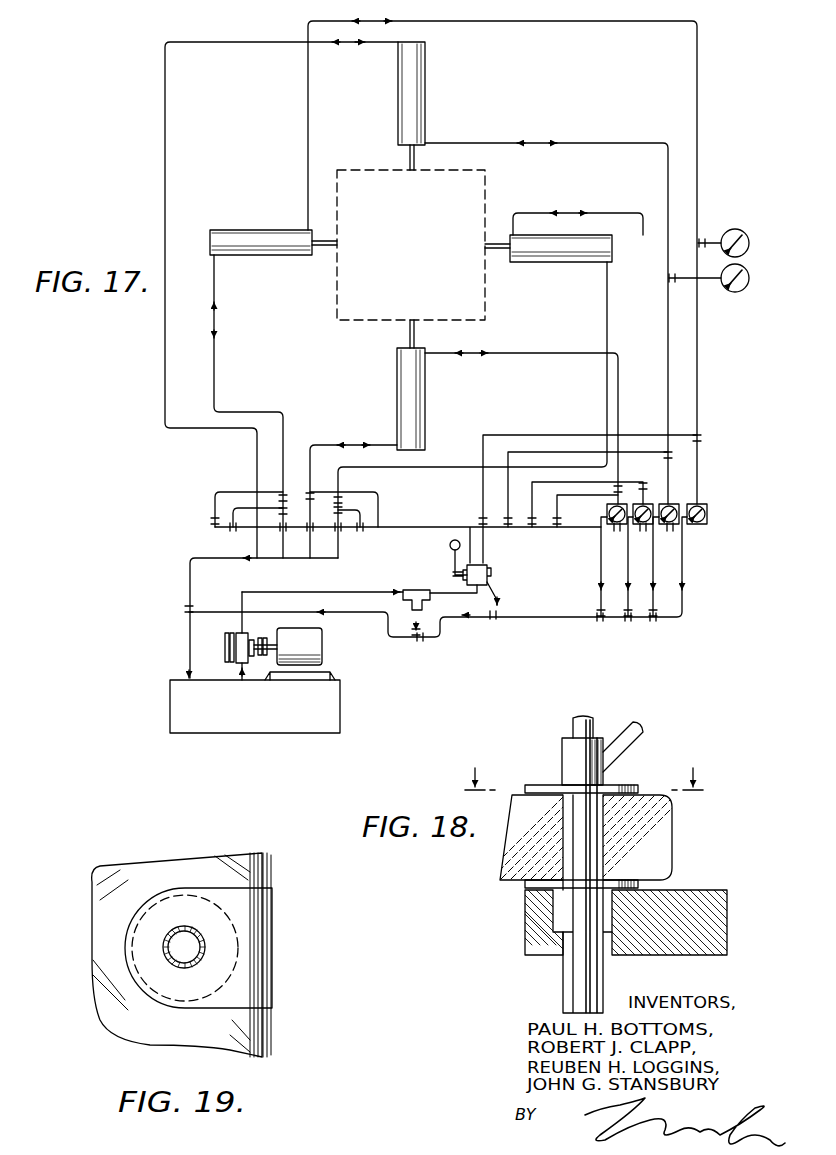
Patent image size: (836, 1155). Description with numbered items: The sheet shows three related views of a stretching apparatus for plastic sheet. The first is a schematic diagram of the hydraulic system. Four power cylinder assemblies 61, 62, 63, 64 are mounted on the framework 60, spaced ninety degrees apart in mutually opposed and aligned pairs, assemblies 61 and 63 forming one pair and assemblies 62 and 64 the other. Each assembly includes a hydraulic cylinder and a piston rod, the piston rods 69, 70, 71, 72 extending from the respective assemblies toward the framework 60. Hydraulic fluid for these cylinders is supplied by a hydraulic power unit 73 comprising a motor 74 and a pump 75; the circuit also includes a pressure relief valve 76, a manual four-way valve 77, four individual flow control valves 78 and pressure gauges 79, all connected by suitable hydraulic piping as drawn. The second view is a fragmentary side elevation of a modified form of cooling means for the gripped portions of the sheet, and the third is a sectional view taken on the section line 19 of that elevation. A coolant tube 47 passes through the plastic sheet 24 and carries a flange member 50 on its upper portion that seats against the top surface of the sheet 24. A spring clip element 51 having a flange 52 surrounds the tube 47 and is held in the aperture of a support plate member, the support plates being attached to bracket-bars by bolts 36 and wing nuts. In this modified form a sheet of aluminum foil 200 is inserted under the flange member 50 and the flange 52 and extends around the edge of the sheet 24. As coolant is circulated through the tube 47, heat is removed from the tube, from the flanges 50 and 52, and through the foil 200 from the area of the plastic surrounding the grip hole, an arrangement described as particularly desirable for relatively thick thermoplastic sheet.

In FIG. 17, the framework 60 is at (489, 193).
In FIG. 17, the power cylinder assembly 61 is at (251, 229).
In FIG. 17, the power cylinder assembly 62 is at (430, 106).
In FIG. 17, the power cylinder assembly 63 is at (576, 264).
In FIG. 17, the power cylinder assembly 64 is at (430, 392).
In FIG. 17, the piston rod 69 is at (325, 247).
In FIG. 17, the piston rod 70 is at (408, 153).
In FIG. 17, the piston rod 71 is at (500, 249).
In FIG. 17, the piston rod 72 is at (407, 335).
In FIG. 17, the hydraulic power unit 73 is at (339, 665).
In FIG. 17, the motor 74 is at (323, 641).
In FIG. 17, the pump 75 is at (224, 648).
In FIG. 17, the pressure relief valve 76 is at (409, 588).
In FIG. 17, the manual 4-way valve 77 is at (489, 572).
In FIG. 17, the individual flow control valve 78 is at (606, 508).
In FIG. 17, the pressure gauge 79 is at (725, 230).
In FIG. 18, the section line 19— 19 is at (584, 766).
In FIG. 18, the plastic sheet 24 is at (665, 818).
In FIG. 19, the plastic sheet 24 is at (266, 862).
In FIG. 18, the sheet of aluminum foil 200 is at (673, 849).
In FIG. 19, the sheet of aluminum foil 200 is at (262, 942).
In FIG. 18, the flange member 50 is at (533, 786).
In FIG. 18, the flange 52 is at (545, 885).
In FIG. 19, the flange 52 is at (238, 922).
In FIG. 18, the spring clip element 51 is at (525, 941).
In FIG. 18, the bolt 36 is at (680, 942).
In FIG. 18, the coolant tube 47 is at (566, 988).
In FIG. 19, the coolant tube 47 is at (206, 952).